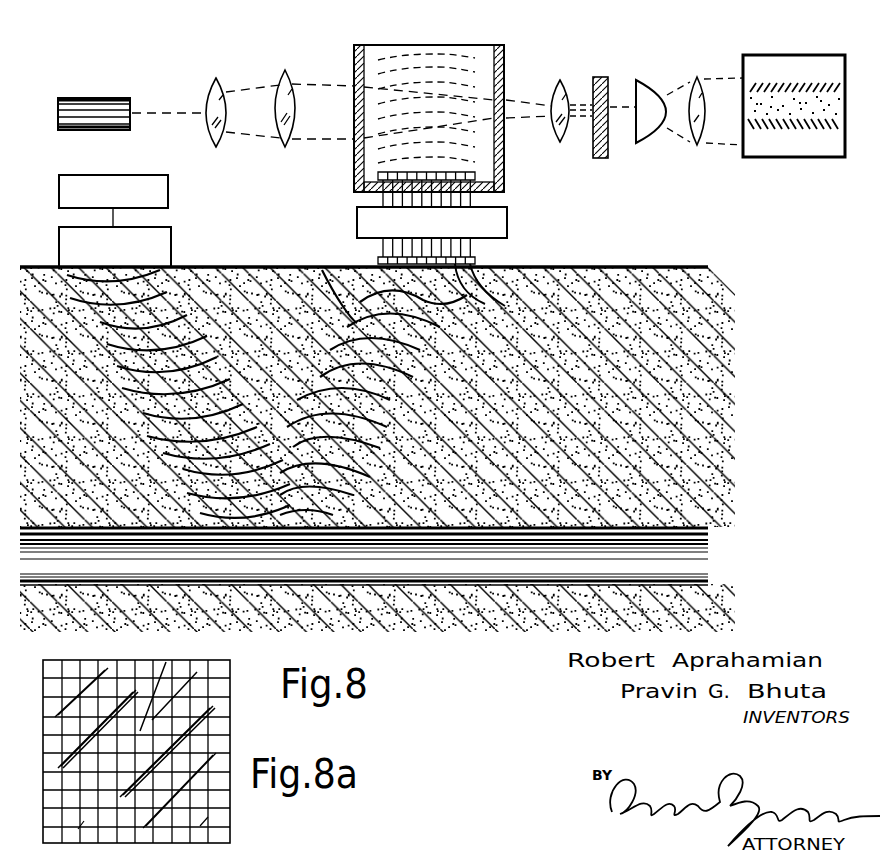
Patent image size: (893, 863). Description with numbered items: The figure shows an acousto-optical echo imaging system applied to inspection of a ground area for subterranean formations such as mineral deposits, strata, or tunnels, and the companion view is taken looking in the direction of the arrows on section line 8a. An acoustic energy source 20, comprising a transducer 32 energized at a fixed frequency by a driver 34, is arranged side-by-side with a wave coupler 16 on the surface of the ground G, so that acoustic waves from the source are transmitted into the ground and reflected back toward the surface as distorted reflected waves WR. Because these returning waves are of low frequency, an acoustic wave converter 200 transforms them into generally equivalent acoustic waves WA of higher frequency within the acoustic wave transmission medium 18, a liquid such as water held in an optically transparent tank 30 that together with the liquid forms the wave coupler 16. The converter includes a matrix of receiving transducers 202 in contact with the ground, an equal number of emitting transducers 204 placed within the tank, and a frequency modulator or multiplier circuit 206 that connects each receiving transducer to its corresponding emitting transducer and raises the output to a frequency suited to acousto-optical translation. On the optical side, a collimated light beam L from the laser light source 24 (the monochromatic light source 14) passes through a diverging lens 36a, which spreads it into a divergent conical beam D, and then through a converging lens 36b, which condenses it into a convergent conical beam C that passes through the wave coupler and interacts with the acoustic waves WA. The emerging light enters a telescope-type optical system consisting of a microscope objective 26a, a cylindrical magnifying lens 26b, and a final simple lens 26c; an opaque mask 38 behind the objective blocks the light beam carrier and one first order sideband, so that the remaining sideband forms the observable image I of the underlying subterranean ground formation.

In FIG. 8, the monochromatic light source 14 is at (84, 98).
In FIG. 8, the diverging lens 36a is at (193, 100).
In FIG. 8, the converging lens 36b is at (290, 70).
In FIG. 8, the divergent conical beam D is at (255, 88).
In FIG. 8, the convergent conical beam C is at (327, 84).
In FIG. 8, the collimated light beam L is at (165, 120).
In FIG. 8, the laser light source 24 is at (243, 138).
In FIG. 8, the wave coupler 16 is at (350, 44).
In FIG. 8, the acoustic wave transmission medium 18 is at (443, 60).
In FIG. 8, the tank 30 is at (503, 60).
In FIG. 8, the acoustic waves within acoustic medium WA is at (400, 68).
In FIG. 8, the emitting transducers 204 is at (378, 180).
In FIG. 8, the frequency modulator or multiplier circuit 206 is at (432, 222).
In FIG. 8, the acoustic wave converter 200 is at (530, 212).
In FIG. 8, the receiving transducers 202 is at (462, 282).
In FIG. 8A, the receiving transducers 202 is at (218, 840).
In FIG. 8, the section line 8a is at (340, 266).
In FIG. 8, the microscope objective 26a is at (563, 77).
In FIG. 8, the opaque mask 38 is at (603, 77).
In FIG. 8, the cylindrical magnifying lens 26b is at (648, 80).
In FIG. 8, the final simple lens 26c is at (707, 55).
In FIG. 8, the observable image I is at (792, 62).
In FIG. 8, the acoustic energy source 20 is at (89, 221).
In FIG. 8, the driver 34 is at (113, 191).
In FIG. 8, the transducer 32 is at (62, 220).
In FIG. 8, the ground G is at (653, 267).
In FIG. 8, the distorted reflected waves WR is at (322, 270).